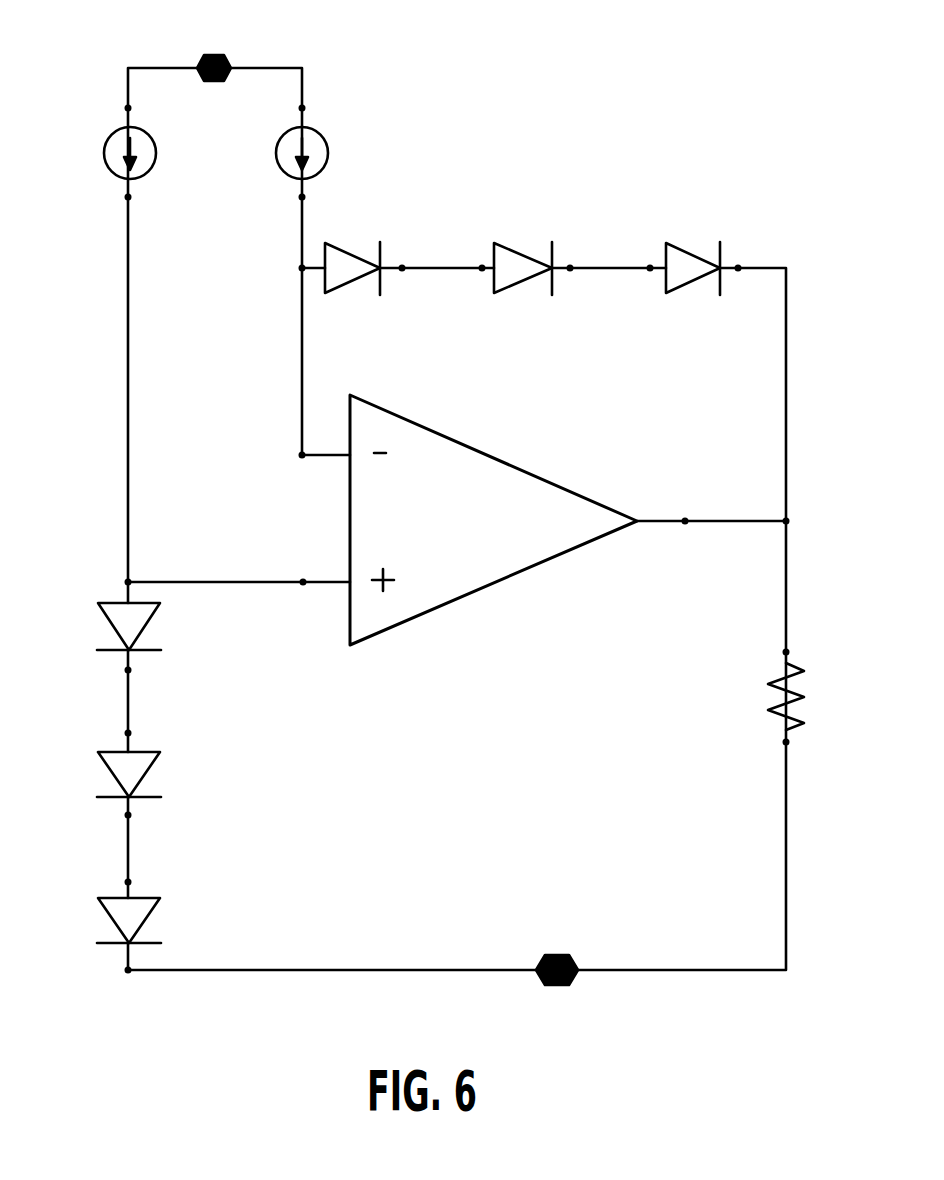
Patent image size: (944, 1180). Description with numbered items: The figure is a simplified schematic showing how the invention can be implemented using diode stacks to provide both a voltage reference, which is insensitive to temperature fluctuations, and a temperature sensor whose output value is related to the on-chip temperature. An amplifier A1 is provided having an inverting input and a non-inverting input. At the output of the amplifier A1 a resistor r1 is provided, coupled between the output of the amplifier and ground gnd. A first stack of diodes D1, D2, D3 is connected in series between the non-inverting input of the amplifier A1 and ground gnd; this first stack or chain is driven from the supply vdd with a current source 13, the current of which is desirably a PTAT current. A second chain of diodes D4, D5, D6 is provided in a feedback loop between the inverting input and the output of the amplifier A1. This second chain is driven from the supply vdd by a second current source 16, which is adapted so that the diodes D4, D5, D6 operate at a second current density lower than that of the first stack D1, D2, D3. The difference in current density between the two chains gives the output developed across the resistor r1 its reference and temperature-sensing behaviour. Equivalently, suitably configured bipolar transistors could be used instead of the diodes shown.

The current I3 13 is at (110, 153).
The current I6 16 is at (281, 153).
The diode D1 is at (107, 920).
The diode D2 is at (106, 772).
The diode D3 is at (106, 626).
The diode D4 is at (352, 241).
The diode D5 is at (523, 241).
The diode D6 is at (693, 241).
The amplifier A1 is at (493, 520).
The resistor r1 is at (803, 696).
The supply voltage vdd is at (216, 47).
The ground gnd is at (557, 943).